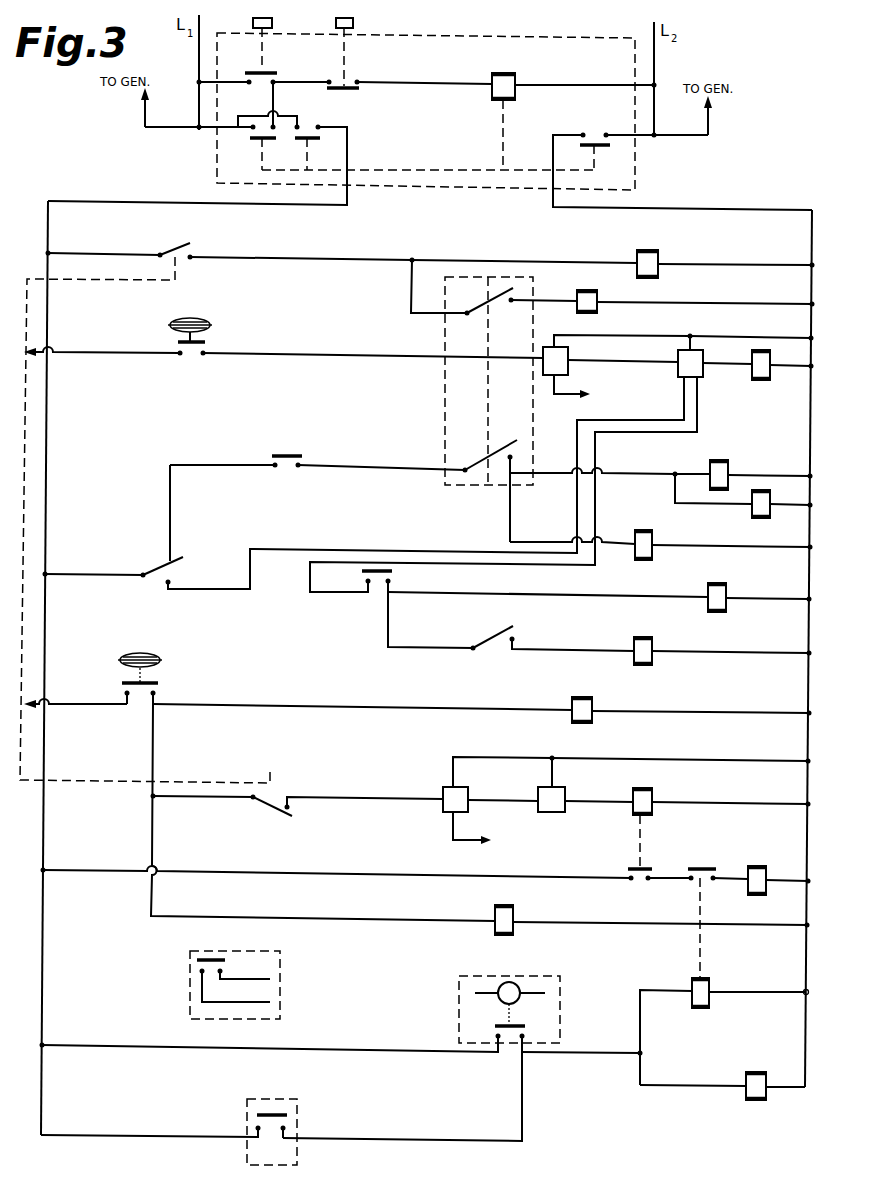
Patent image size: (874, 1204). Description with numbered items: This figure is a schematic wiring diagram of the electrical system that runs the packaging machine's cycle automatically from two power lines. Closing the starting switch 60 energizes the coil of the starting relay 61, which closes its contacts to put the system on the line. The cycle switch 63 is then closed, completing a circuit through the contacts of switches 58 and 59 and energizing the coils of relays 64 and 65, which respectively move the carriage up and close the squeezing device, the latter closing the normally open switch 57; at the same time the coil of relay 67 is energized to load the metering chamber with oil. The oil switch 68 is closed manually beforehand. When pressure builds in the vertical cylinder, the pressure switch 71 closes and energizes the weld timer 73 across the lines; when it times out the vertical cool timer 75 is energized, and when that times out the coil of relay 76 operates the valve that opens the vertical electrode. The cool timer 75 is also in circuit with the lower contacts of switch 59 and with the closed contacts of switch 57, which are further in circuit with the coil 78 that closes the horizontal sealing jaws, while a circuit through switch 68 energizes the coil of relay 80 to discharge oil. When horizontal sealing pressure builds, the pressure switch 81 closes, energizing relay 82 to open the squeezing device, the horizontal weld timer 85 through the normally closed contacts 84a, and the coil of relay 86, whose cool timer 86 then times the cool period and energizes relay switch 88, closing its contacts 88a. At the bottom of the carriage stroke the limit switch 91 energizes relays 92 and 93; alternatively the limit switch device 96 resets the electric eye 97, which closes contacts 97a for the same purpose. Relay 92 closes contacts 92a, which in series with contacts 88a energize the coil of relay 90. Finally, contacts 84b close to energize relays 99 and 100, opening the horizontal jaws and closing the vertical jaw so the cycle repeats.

The normally open switch 57 is at (396, 577).
The switch 58 is at (271, 456).
The limit switch 59 is at (163, 563).
The starting switch 60 is at (272, 80).
The starting relay 61 is at (515, 78).
The cycle switch 63 is at (488, 350).
The relay 64 is at (722, 460).
The relay 65 is at (770, 496).
The relay 67 is at (652, 540).
The oil switch 68 is at (480, 639).
The pressure switch 71 is at (212, 341).
The weld timer 73 is at (568, 364).
The vertical cool timer 75 is at (678, 370).
The relay 76 is at (752, 373).
The relay coil 78 is at (726, 591).
The relay 80 is at (652, 642).
The pressure switch 81 is at (160, 690).
The relay 82 is at (572, 719).
The normally closed contacts 84a is at (278, 797).
The contacts 84b is at (200, 241).
The horizontal weld timer 85 is at (441, 796).
The horizontal cool timer 86 is at (540, 790).
The relay switch 88 is at (652, 795).
The contacts 88a is at (627, 868).
The relay 90 is at (757, 866).
The limit switch 91 is at (297, 1150).
The relay 92 is at (709, 986).
The contacts 92a is at (716, 909).
The relay 93 is at (746, 1091).
The limit switch device 96 is at (273, 962).
The electric eye 97 is at (522, 988).
The contacts 97a is at (530, 1028).
The relay 99 is at (658, 254).
The relay 100 is at (577, 296).